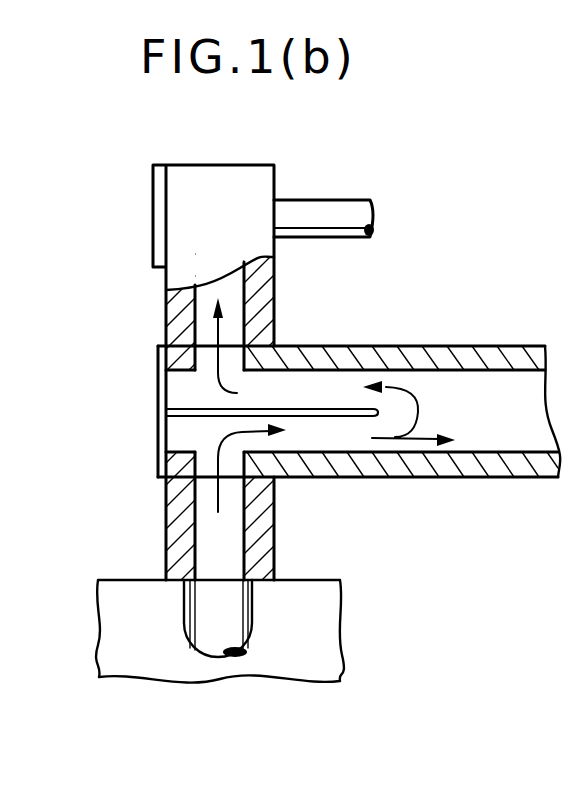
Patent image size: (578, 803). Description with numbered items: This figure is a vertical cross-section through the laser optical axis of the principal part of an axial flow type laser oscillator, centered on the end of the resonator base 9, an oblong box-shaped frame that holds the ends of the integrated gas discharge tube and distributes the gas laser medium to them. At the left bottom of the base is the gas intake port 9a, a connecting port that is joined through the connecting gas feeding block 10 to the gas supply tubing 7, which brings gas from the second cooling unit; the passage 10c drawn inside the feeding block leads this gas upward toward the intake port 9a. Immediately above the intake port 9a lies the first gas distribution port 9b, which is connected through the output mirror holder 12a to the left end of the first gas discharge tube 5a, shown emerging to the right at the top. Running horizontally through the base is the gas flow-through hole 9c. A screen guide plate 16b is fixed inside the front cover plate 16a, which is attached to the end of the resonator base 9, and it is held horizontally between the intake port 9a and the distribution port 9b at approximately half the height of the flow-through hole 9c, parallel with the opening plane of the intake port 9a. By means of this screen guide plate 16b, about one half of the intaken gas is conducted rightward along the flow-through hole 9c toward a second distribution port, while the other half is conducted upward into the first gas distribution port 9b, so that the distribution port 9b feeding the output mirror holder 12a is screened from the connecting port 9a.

The gas discharge tube 5a is at (340, 212).
The gas supply tubing 7 is at (205, 630).
The resonator base 9 is at (452, 353).
The gas intake port 9a is at (155, 462).
The first gas distribution port 9b is at (180, 362).
The gas flow-through hole 9c is at (317, 388).
The connecting gas feeding block 10 is at (178, 515).
The nozzle passage 10c is at (222, 530).
The output mirror holder 12a is at (166, 310).
The front cover plate 16a is at (160, 395).
The screen guide plate 16b is at (172, 419).